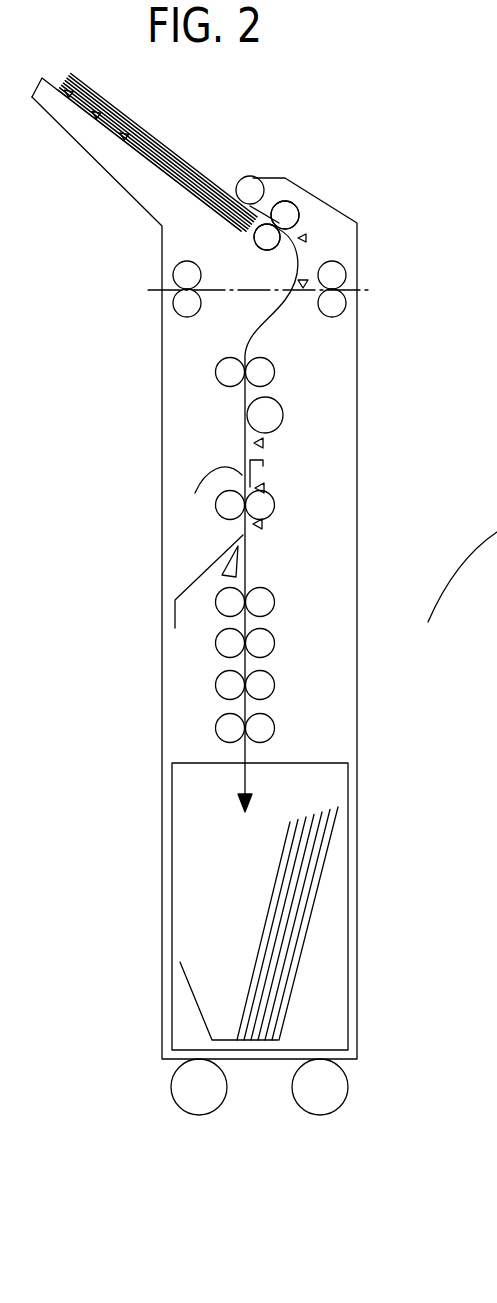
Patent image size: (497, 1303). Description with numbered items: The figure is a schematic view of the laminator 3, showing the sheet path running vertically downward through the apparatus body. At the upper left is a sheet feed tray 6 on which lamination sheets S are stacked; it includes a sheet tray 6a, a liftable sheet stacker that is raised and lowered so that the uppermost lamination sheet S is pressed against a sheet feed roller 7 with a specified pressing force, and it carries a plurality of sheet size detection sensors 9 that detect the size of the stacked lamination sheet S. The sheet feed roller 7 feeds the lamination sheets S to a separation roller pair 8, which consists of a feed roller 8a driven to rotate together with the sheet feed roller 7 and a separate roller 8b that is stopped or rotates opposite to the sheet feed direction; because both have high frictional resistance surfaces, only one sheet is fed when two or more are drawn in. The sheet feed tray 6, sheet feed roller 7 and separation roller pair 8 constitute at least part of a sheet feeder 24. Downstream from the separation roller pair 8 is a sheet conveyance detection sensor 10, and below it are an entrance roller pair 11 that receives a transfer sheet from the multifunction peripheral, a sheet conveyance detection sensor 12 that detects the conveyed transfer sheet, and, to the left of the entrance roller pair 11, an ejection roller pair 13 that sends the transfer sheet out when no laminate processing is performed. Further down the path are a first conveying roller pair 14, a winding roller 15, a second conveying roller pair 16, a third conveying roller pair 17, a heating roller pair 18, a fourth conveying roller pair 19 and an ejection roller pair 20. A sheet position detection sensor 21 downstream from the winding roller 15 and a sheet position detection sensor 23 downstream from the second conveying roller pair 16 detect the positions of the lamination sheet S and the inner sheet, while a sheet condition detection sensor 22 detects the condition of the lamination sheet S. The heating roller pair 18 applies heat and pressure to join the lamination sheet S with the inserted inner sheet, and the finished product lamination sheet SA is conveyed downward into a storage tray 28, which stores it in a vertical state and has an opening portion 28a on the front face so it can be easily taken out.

The laminator 3 is at (339, 137).
The sheet feed tray 6 is at (126, 186).
The sheet tray 6a is at (193, 200).
The sheet feed roller 7 is at (252, 177).
The separation roller pair 8 is at (249, 249).
The feed roller 8a is at (292, 204).
The separate roller 8b is at (279, 249).
The sheet size detection sensors 9 is at (63, 112).
The sheet conveyance detection sensor 10 is at (311, 239).
The entrance roller pair 11 is at (333, 325).
The sheet conveyance detection sensor 12 is at (302, 297).
The ejection roller pair 13 is at (187, 325).
The first conveying roller pair 14 is at (235, 356).
The winding roller 15 is at (287, 413).
The second conveying roller pair 16 is at (209, 514).
The third conveying roller pair 17 is at (281, 594).
The heating roller pair 18 is at (281, 636).
The fourth conveying roller pair 19 is at (281, 678).
The ejection roller pair 20 is at (281, 721).
The sheet position detection sensor 21 is at (266, 443).
The sheet condition detection sensor 22 is at (268, 486).
The sheet position detection sensor 23 is at (266, 526).
The sheet feeder 24 is at (199, 136).
The storage tray 28 is at (198, 753).
The opening portion 28a is at (172, 908).
The lamination sheet S is at (150, 122).
The finished product lamination sheet SA is at (277, 869).